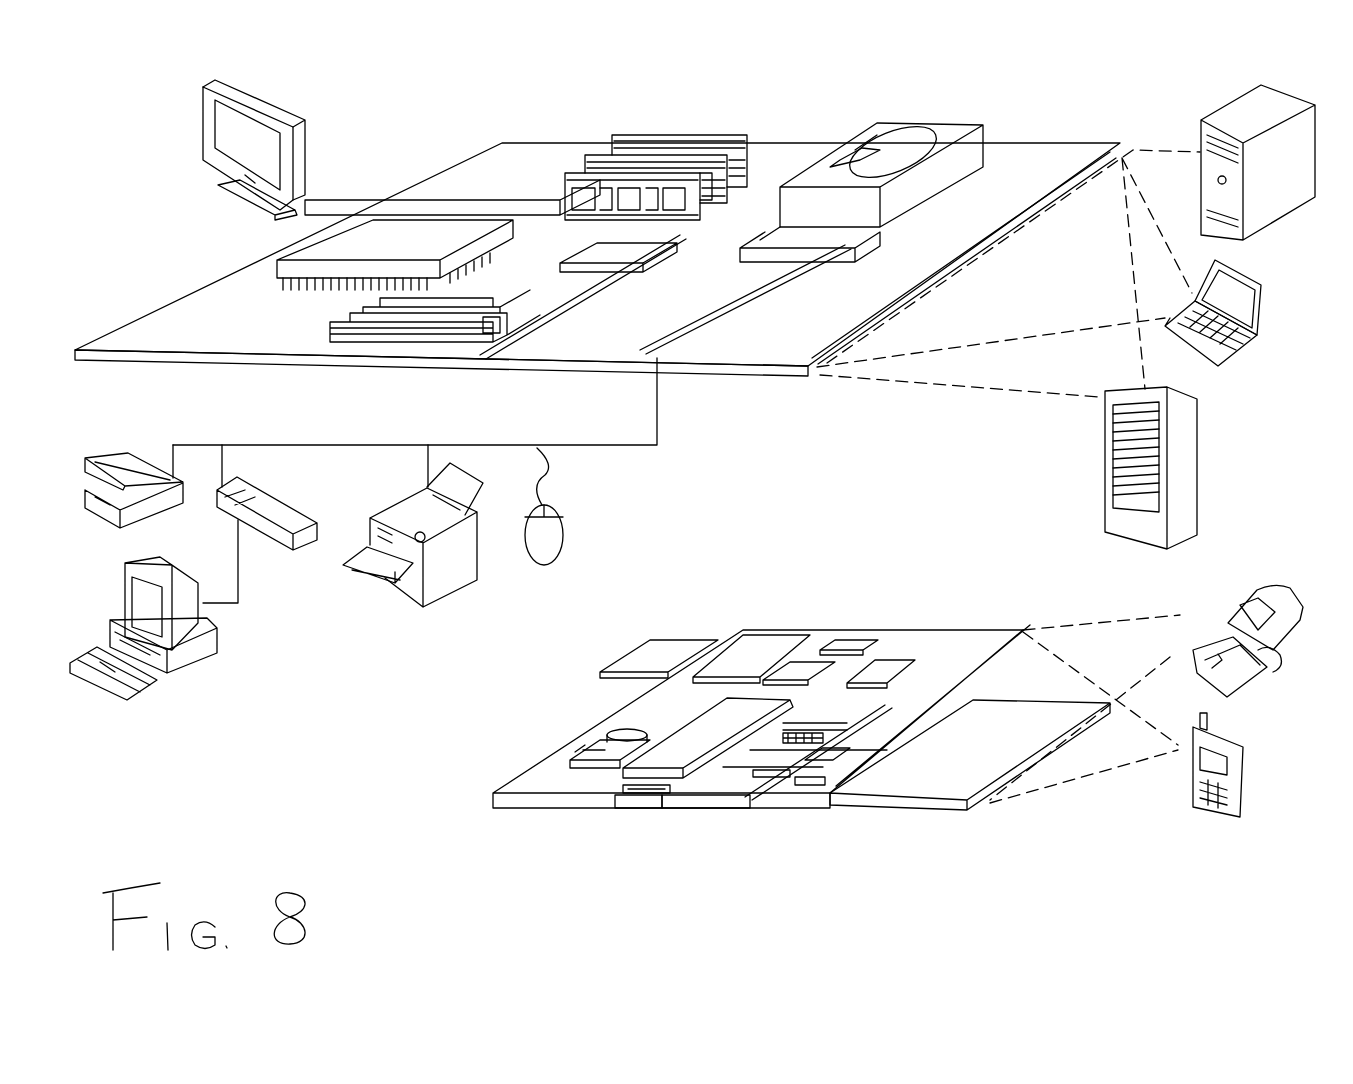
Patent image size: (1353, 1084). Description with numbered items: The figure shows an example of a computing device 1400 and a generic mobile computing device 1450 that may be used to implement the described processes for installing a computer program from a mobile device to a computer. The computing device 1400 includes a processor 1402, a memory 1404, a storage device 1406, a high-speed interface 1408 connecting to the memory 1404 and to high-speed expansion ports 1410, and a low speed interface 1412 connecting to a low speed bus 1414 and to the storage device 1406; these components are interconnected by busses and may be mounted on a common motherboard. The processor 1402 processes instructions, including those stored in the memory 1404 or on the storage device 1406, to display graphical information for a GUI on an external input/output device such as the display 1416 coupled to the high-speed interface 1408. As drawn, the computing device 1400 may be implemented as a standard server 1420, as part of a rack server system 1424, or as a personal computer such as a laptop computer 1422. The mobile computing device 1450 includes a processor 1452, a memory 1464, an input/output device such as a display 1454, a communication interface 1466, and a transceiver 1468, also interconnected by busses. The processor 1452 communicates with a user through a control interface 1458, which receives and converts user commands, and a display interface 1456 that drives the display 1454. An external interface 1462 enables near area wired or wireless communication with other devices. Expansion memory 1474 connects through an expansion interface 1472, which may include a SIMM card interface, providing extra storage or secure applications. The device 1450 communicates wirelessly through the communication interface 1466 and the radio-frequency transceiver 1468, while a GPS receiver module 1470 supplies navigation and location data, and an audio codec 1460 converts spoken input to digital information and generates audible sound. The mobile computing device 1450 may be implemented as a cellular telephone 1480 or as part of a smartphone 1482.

The computing device 1400 is at (405, 110).
The processor 1402 is at (247, 266).
The memory 1404 is at (626, 127).
The storage device 1406 is at (867, 125).
The high-speed interface 1408 is at (525, 205).
The high-speed expansion ports 1410 is at (327, 323).
The low speed interface 1412 is at (775, 253).
The low speed bus 1414 is at (673, 360).
The display 1416 is at (205, 90).
The standard server 1420 is at (1201, 130).
The laptop computer 1422 is at (1276, 292).
The rack server system 1424 is at (1118, 493).
The mobile computing device 1450 is at (467, 803).
The processor 1452 is at (677, 810).
The display 1454 is at (927, 780).
The display interface 1456 is at (763, 773).
The control interface 1458 is at (807, 780).
The audio codec 1460 is at (820, 747).
The external interface 1462 is at (643, 810).
The memory 1464 is at (580, 745).
The communication interface 1466 is at (807, 673).
The transceiver 1468 is at (890, 667).
The GPS receiver module 1470 is at (853, 640).
The expansion interface 1472 is at (720, 635).
The expansion memory 1474 is at (647, 640).
The cellular telephone 1480 is at (1255, 593).
The smartphone 1482 is at (1193, 770).